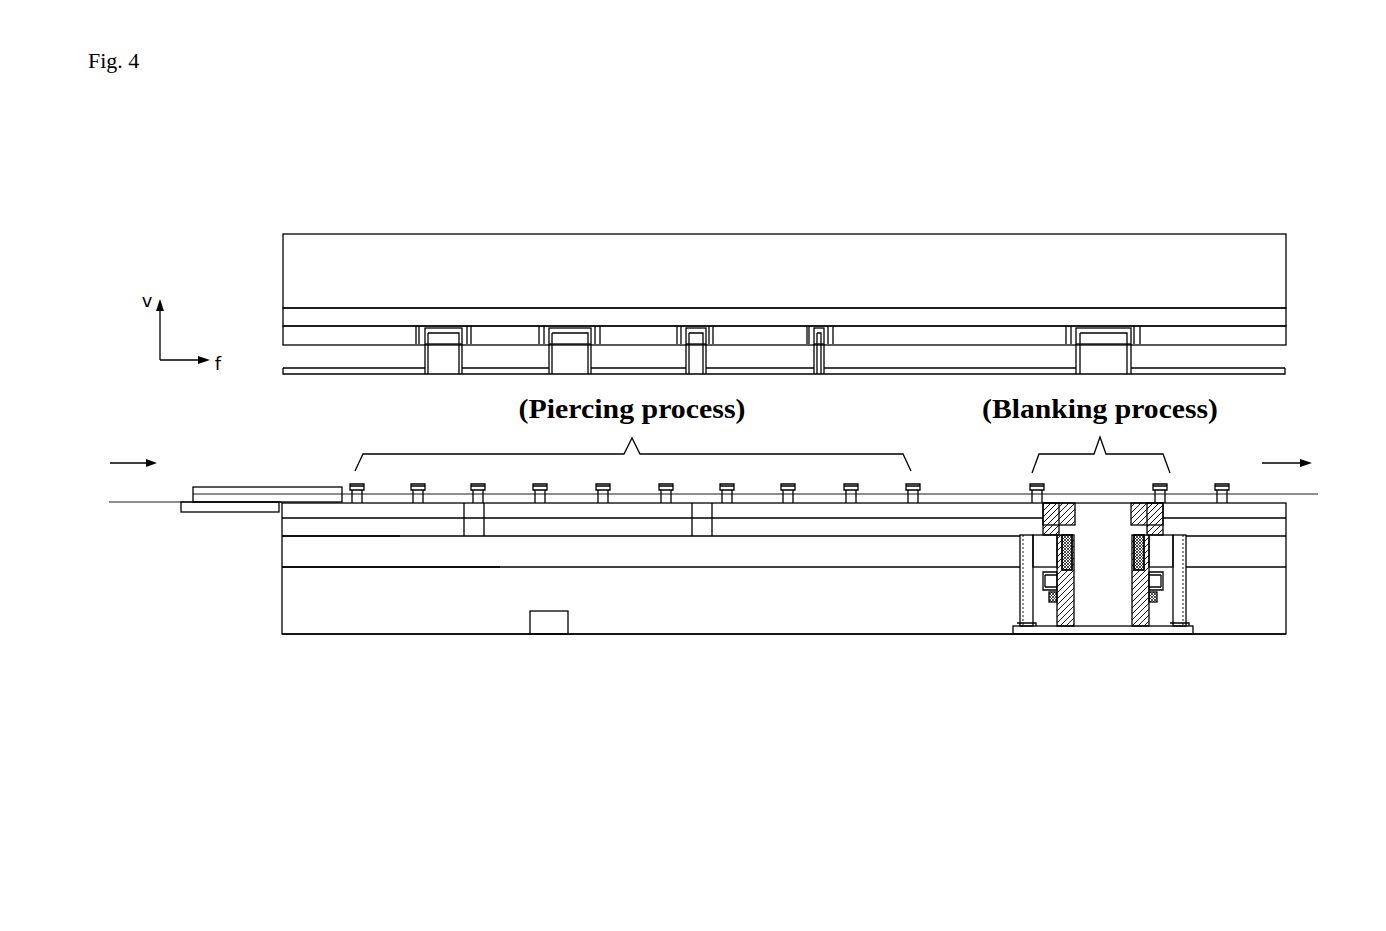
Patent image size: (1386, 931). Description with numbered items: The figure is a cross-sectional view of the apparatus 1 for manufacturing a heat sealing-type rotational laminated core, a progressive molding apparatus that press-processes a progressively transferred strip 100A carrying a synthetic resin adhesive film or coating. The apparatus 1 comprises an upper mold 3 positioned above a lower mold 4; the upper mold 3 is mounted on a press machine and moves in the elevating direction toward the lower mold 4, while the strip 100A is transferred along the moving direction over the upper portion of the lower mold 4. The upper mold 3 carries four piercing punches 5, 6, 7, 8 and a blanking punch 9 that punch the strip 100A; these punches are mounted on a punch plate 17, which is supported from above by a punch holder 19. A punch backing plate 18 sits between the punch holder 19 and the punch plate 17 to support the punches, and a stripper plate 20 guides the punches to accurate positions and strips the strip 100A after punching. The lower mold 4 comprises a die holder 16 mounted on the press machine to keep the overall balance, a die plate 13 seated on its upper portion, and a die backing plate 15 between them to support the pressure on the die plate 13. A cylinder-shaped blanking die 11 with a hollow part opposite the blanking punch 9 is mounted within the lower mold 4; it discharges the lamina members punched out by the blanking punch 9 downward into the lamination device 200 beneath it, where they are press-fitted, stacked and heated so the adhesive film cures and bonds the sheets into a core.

The apparatus 1 is at (928, 198).
The upper mold 3 is at (1185, 222).
The lower mold 4 is at (375, 637).
The piercing punch 5 is at (444, 332).
The piercing punch 6 is at (572, 332).
The piercing punch 7 is at (698, 332).
The piercing punch 8 is at (818, 332).
The blanking punch 9 is at (1107, 347).
The blanking die 11 is at (1140, 509).
The die plate 13 is at (1281, 519).
The die backing plate 15 is at (1281, 556).
The die holder 16 is at (1277, 606).
The punch plate 17 is at (1278, 331).
The punch backing plate 18 is at (1278, 318).
The punch holder 19 is at (1278, 264).
The stripper plate 20 is at (1278, 372).
The strip 100A is at (148, 503).
The lamination device 200 is at (1057, 610).